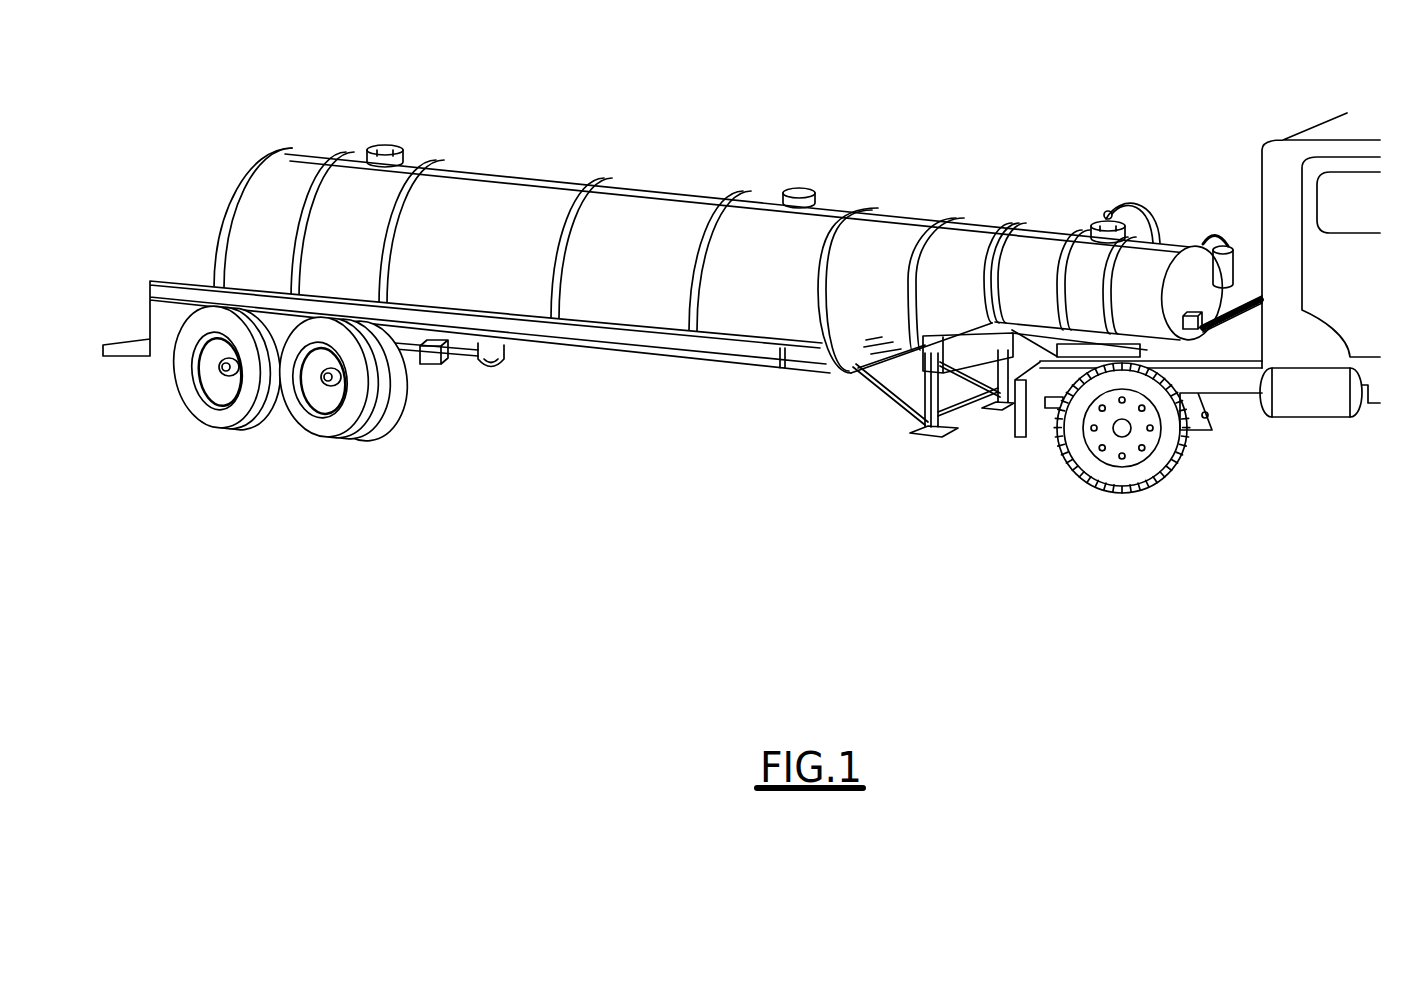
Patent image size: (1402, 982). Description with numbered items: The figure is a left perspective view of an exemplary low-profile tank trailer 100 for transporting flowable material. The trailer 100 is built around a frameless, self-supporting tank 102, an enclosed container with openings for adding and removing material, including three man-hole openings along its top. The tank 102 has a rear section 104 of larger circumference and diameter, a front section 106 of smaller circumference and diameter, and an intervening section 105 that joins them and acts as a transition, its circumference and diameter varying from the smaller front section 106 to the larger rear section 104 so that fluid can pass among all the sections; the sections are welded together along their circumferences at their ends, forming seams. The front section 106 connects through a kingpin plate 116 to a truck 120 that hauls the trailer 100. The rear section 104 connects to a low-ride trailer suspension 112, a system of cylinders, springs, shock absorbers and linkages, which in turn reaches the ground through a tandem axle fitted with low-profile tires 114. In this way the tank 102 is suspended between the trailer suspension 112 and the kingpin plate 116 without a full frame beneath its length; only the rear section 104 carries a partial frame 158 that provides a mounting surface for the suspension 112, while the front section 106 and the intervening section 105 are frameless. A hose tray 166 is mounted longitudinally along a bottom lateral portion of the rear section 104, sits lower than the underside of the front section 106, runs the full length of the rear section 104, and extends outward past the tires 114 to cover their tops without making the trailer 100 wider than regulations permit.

The low-profile tank trailer 100 is at (682, 303).
The tank 102 is at (738, 264).
The rear section 104 is at (847, 192).
The intervening section 105 is at (1028, 220).
The front section 106 is at (1194, 233).
The trailer suspension 112 is at (452, 364).
The low-profile tires 114 is at (270, 415).
The kingpin plate 116 is at (1040, 365).
The truck 120 is at (1285, 475).
The partial frame 158 is at (490, 345).
The hose tray 166 is at (212, 290).